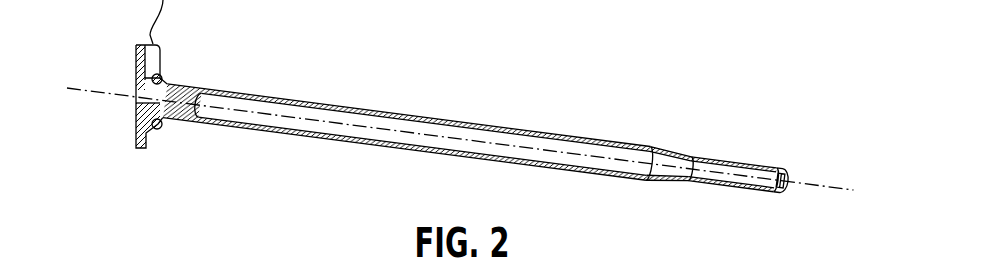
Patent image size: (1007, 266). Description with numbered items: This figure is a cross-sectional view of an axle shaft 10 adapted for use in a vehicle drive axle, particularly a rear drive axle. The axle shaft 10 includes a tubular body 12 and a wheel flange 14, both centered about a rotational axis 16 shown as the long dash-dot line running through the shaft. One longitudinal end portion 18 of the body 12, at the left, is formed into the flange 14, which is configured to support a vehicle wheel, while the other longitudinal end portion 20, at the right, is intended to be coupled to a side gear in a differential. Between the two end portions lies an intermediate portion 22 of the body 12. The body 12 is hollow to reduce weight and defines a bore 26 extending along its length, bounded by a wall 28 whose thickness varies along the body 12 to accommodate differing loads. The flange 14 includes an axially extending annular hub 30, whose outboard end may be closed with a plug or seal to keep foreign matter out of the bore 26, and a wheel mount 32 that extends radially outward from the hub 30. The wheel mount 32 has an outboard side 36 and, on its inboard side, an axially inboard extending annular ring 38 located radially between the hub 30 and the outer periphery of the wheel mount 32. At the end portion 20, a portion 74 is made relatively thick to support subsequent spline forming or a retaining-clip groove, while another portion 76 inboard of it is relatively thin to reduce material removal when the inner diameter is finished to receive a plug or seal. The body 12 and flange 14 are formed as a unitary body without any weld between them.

The axle shaft 10 is at (477, 112).
The tubular body 12 is at (355, 120).
The wheel flange 14 is at (161, 60).
The rotational axis 16 is at (811, 184).
The longitudinal end portion 18 is at (201, 80).
The longitudinal end portion 20 is at (738, 150).
The intermediate portion 22 is at (318, 106).
The bore 26 is at (291, 130).
The wall 28 is at (379, 142).
The annular hub 30 is at (173, 118).
The wheel mount 32 is at (136, 133).
The outboard side 36 is at (135, 62).
The annular ring 38 is at (160, 130).
The portion 74 is at (738, 192).
The portion 76 is at (773, 195).